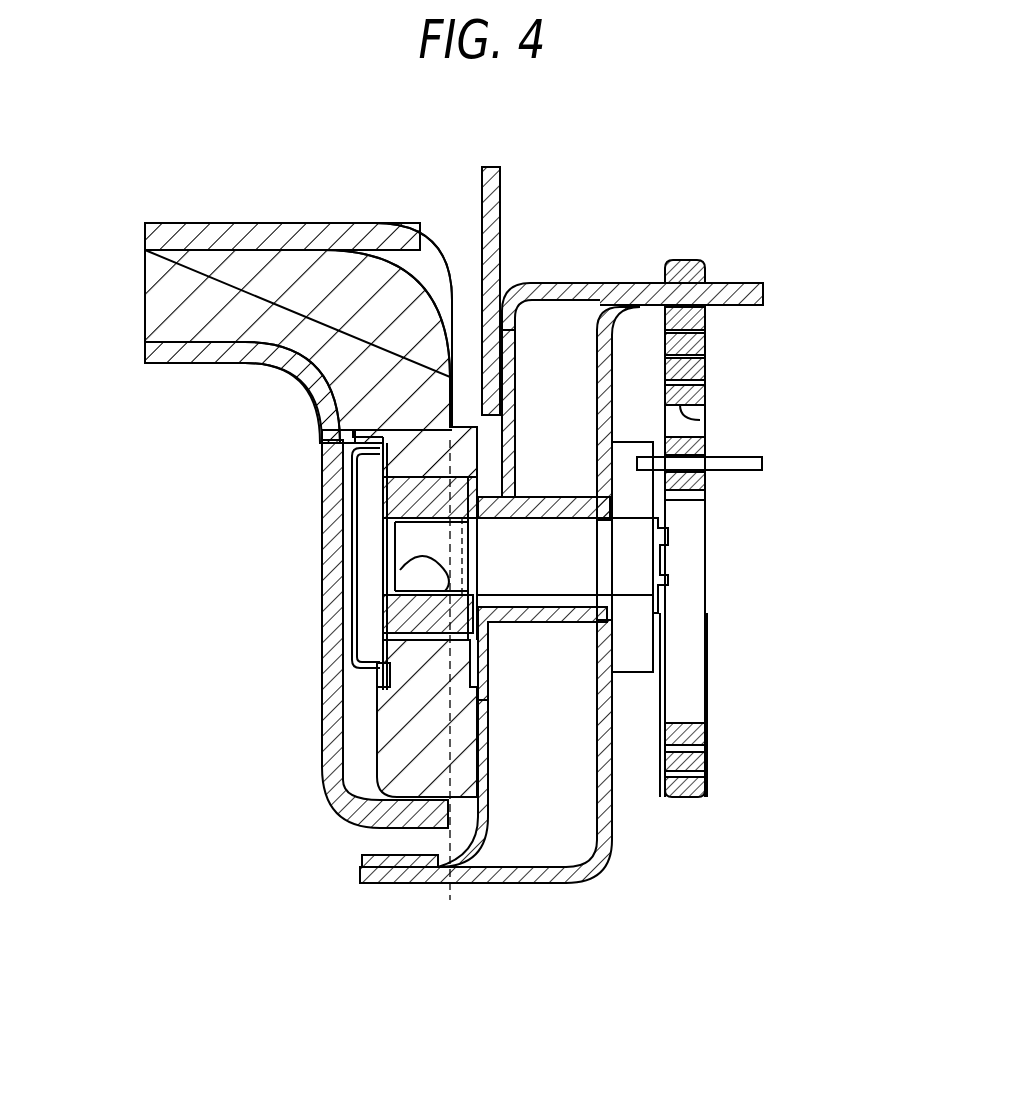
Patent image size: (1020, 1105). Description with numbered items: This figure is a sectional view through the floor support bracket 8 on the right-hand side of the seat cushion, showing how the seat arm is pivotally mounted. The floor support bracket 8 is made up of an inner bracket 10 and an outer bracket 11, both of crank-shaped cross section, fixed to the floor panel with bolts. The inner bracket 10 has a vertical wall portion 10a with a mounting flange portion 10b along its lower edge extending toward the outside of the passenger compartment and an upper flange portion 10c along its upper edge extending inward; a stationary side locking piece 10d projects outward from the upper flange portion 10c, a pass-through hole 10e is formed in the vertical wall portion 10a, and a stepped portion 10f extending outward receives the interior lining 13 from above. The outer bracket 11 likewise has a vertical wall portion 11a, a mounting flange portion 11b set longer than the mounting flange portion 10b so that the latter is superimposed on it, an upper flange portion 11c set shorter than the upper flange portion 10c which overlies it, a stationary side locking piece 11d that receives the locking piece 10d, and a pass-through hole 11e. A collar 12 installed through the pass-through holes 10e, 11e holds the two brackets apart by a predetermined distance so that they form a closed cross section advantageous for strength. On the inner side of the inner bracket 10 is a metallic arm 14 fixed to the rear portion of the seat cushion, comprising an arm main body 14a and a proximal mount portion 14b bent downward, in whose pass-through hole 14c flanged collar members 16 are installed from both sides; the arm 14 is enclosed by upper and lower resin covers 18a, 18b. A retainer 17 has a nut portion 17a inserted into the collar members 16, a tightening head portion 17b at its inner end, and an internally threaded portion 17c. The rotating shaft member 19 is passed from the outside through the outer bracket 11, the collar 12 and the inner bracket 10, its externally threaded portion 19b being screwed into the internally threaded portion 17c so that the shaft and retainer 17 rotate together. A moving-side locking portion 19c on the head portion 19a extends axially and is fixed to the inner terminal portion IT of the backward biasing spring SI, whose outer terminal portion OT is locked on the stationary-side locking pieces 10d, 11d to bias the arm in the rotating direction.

The floor support bracket 8 is at (528, 250).
The inner bracket 10 is at (537, 539).
The vertical wall portion 10a is at (490, 668).
The mounting flange portion 10b is at (395, 840).
The upper flange portion 10c is at (565, 285).
The stationary side locking piece 10d is at (750, 283).
The pass-through hole 10e is at (487, 495).
The stepped portion 10f is at (500, 416).
The outer bracket 11 is at (609, 575).
The vertical wall portion 11a is at (758, 482).
The mounting flange portion 11b is at (520, 860).
The upper flange portion 11c is at (623, 297).
The stationary side locking piece 11d is at (748, 312).
The pass-through hole 11e is at (612, 513).
The collar 12 is at (570, 622).
The interior lining 13 is at (485, 208).
The arm 14 is at (262, 417).
The arm main body 14a is at (180, 300).
The proximal mount portion 14b is at (330, 430).
The pass-through hole 14c is at (377, 490).
The collar members 16 is at (330, 458).
The retainer 17 is at (350, 634).
The nut portion 17a is at (407, 700).
The tightening head portion 17b is at (363, 578).
The internally threaded portion 17c is at (385, 680).
The cover 18a is at (277, 233).
The cover 18b is at (197, 362).
The rotating shaft member 19 is at (667, 621).
The head portion 19a is at (633, 597).
The externally threaded portion 19b is at (633, 558).
The moving-side locking portion 19c is at (750, 455).
The outer terminal portion OT is at (707, 283).
The backward biasing spring SI is at (707, 397).
The inner terminal portion IT is at (707, 420).